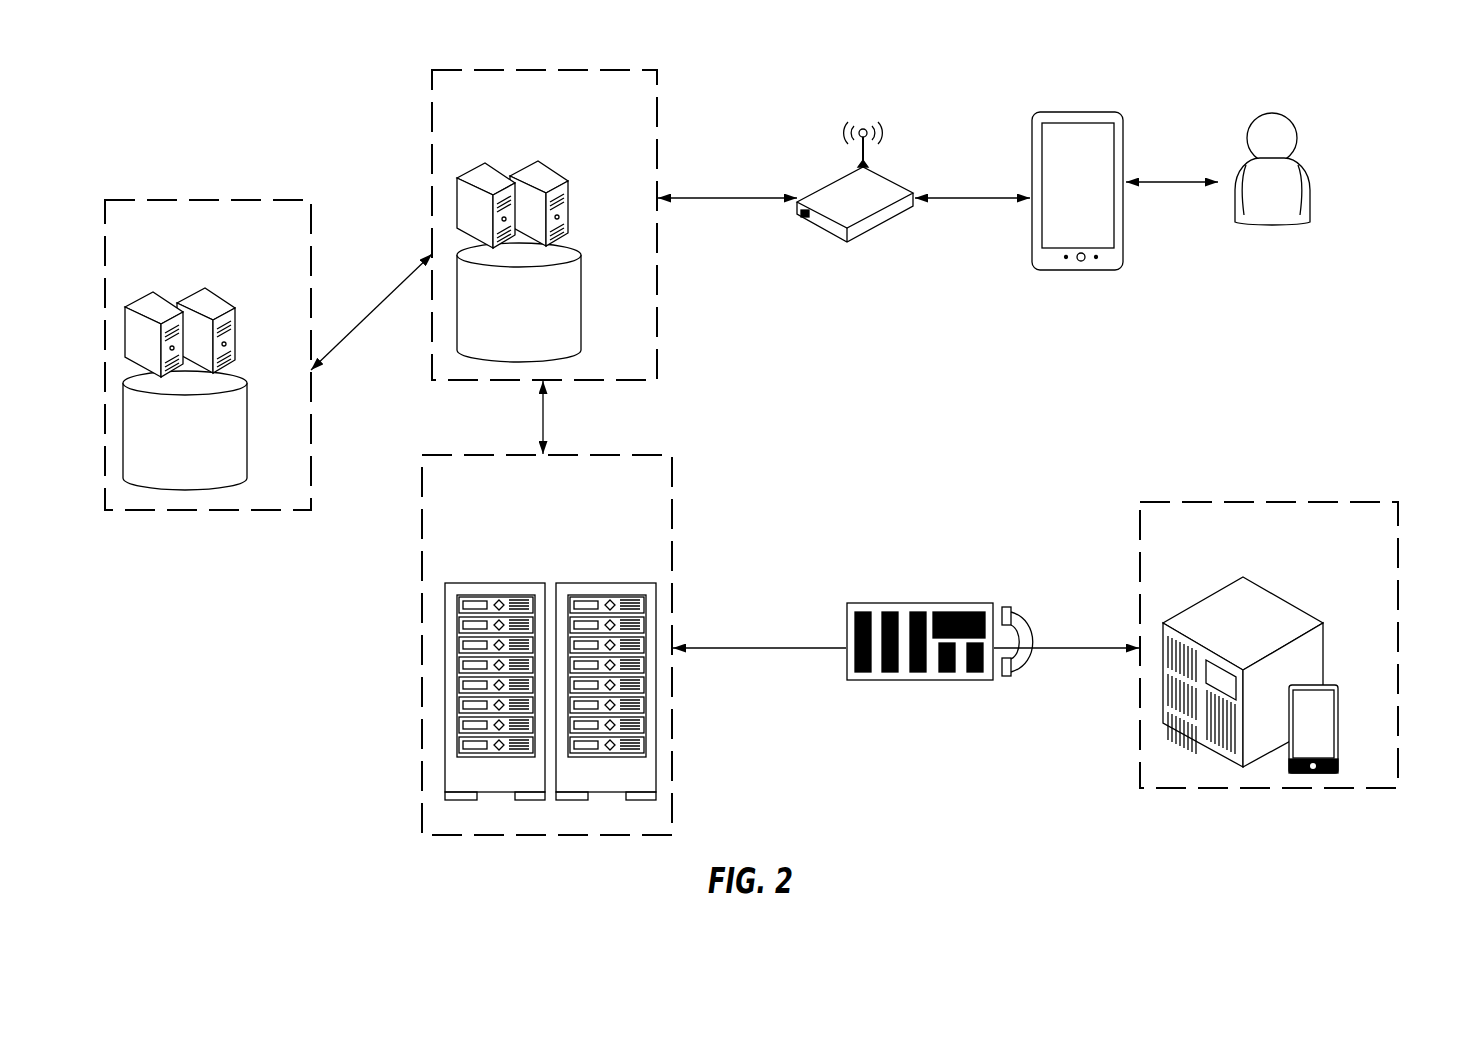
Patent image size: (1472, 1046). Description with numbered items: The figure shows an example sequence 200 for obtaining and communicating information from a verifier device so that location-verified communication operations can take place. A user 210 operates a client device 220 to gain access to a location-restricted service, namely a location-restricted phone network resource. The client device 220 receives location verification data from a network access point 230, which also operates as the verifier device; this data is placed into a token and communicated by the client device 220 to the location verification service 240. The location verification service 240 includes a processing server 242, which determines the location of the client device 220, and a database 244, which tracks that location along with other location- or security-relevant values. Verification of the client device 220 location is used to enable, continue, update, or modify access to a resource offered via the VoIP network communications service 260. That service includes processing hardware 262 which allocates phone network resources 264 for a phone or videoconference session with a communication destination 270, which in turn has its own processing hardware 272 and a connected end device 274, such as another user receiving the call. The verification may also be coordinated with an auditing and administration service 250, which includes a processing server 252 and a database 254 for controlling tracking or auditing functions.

The sequence 200 is at (1348, 70).
The user 210 is at (1250, 124).
The client device 220 is at (1032, 125).
The network access point 230 is at (818, 193).
The location verification service 240 is at (454, 70).
The processing server 242 is at (569, 197).
The database 244 is at (582, 302).
The auditing and administration service 250 is at (142, 200).
The processing server 252 is at (238, 341).
The database 254 is at (248, 448).
The VoIP network communications service 260 is at (673, 471).
The processing hardware 262 is at (445, 585).
The phone network resources 264 is at (861, 604).
The communication destination 270 is at (1148, 503).
The processing hardware 272 is at (1222, 615).
The connected end device 274 is at (1330, 687).